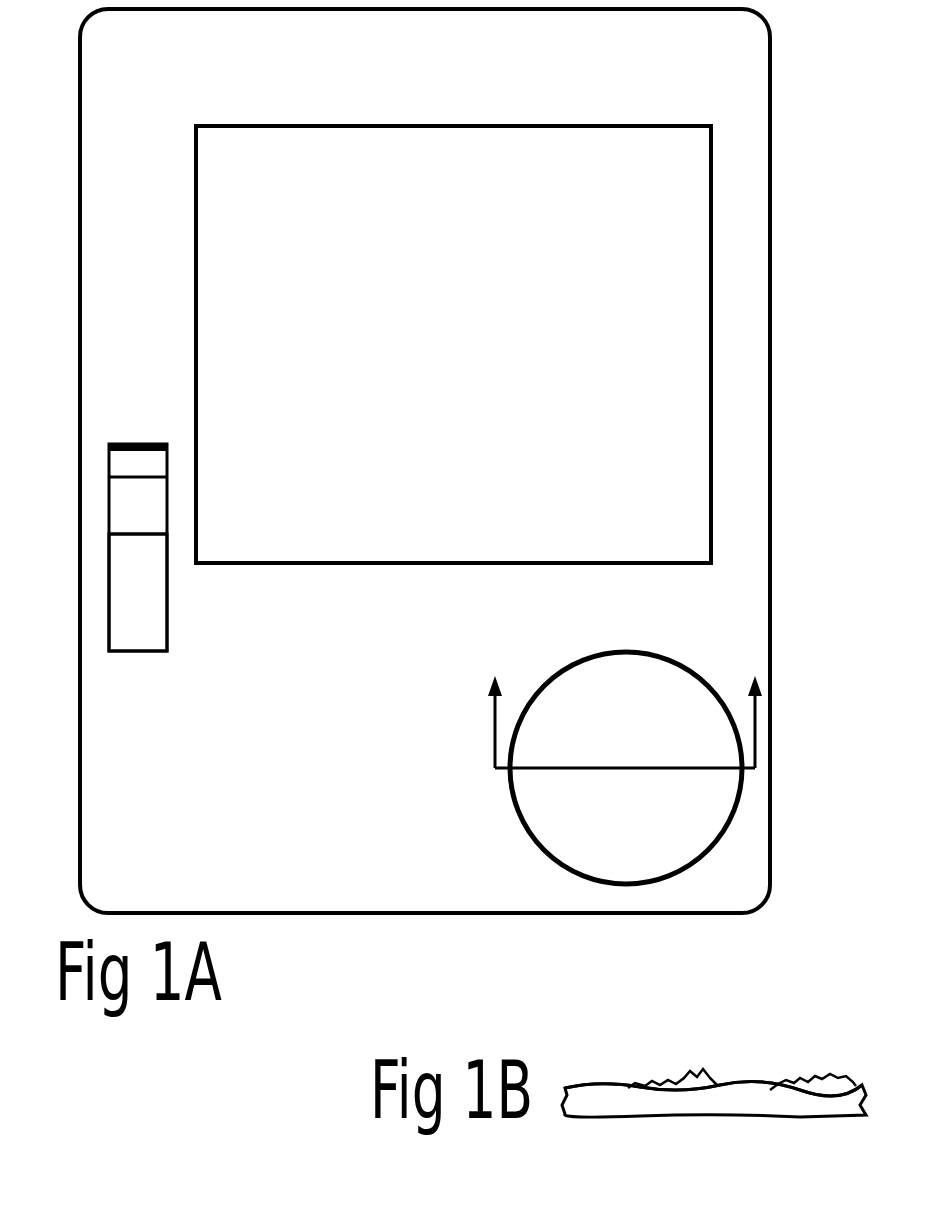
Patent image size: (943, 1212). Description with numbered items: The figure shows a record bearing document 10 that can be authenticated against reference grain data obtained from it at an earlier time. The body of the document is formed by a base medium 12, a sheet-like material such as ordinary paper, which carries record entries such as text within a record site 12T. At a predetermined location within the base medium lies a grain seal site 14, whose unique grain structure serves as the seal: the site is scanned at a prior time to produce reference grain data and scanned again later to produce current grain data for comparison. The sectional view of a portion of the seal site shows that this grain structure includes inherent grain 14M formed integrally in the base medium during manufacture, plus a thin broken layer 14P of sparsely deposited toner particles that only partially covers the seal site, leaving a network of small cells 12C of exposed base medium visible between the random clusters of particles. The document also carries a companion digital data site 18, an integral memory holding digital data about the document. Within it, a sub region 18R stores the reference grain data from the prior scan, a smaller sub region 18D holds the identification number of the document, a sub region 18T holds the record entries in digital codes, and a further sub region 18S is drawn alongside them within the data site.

In FIG. 1A, the record bearing document 10 is at (58, 135).
In FIG. 1A, the base medium 12 is at (174, 84).
In FIG. 1A, the record site 12T is at (414, 325).
In FIG. 1B, the small cells of exposed base medium 12C is at (742, 1083).
In FIG. 1A, the grain seal site 14 is at (560, 822).
In FIG. 1B, the broken layer of deposited grain 14P is at (690, 1075).
In FIG. 1B, the inherent grain 14M is at (712, 1103).
In FIG. 1A, the digital data site 18 is at (97, 551).
In FIG. 1A, the sub region for document identification 18D is at (130, 442).
In FIG. 1A, the switch 18S is at (130, 463).
In FIG. 1A, the sub region for record entry codes 18T is at (130, 522).
In FIG. 1A, the sub region for reference grain data 18R is at (130, 580).